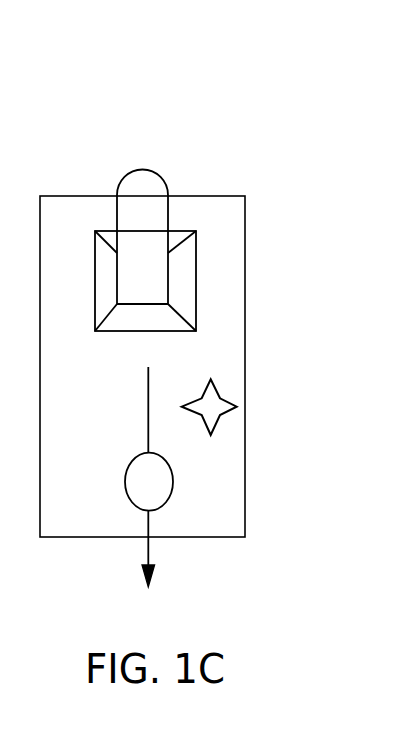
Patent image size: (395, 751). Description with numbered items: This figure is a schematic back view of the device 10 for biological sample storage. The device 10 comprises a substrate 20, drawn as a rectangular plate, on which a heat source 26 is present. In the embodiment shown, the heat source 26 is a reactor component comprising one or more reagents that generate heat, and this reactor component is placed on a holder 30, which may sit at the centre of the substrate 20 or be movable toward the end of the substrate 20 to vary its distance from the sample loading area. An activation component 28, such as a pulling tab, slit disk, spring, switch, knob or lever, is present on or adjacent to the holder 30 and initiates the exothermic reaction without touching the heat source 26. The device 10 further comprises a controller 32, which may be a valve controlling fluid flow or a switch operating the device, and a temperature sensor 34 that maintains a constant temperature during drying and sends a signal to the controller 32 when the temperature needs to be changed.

The device 10 is at (235, 73).
The substrate 20 is at (217, 196).
The heat source 26 is at (262, 231).
The activation component 28 is at (118, 187).
The holder 30 is at (196, 295).
The controller 32 is at (124, 483).
The temperature sensor 34 is at (218, 422).